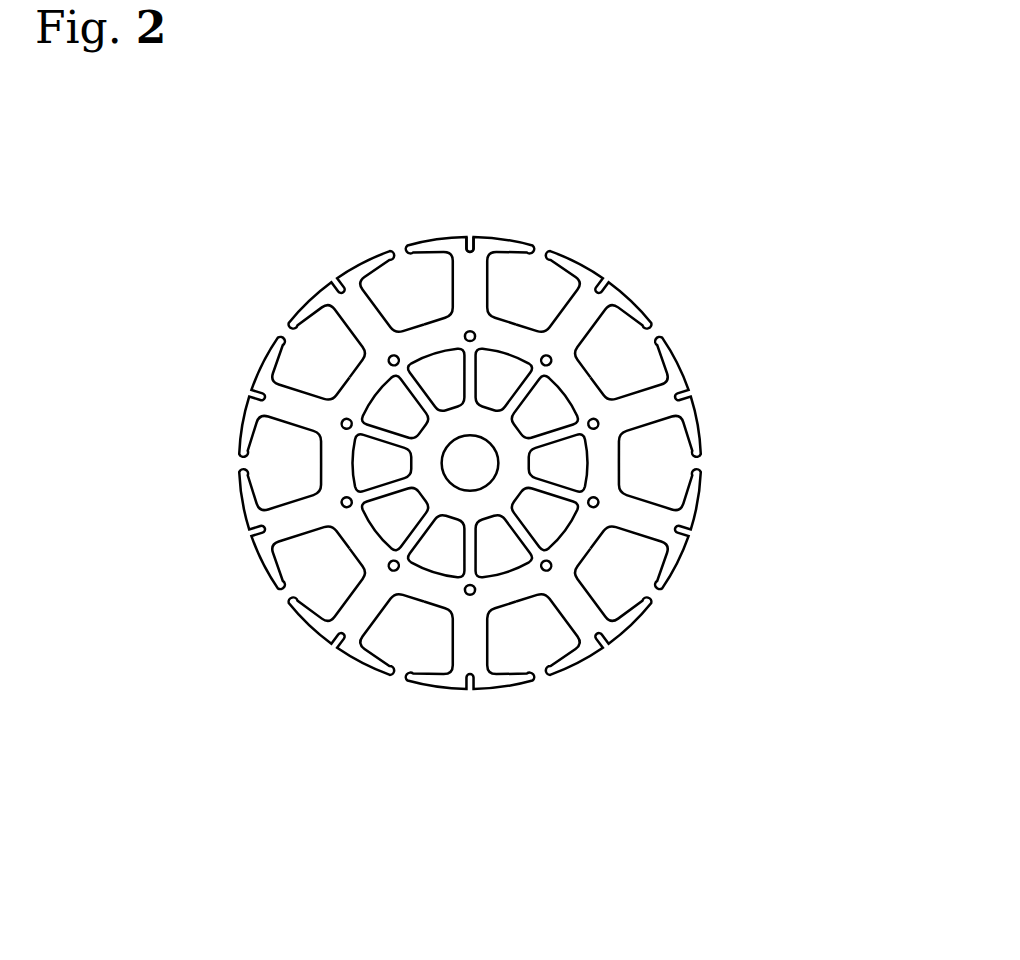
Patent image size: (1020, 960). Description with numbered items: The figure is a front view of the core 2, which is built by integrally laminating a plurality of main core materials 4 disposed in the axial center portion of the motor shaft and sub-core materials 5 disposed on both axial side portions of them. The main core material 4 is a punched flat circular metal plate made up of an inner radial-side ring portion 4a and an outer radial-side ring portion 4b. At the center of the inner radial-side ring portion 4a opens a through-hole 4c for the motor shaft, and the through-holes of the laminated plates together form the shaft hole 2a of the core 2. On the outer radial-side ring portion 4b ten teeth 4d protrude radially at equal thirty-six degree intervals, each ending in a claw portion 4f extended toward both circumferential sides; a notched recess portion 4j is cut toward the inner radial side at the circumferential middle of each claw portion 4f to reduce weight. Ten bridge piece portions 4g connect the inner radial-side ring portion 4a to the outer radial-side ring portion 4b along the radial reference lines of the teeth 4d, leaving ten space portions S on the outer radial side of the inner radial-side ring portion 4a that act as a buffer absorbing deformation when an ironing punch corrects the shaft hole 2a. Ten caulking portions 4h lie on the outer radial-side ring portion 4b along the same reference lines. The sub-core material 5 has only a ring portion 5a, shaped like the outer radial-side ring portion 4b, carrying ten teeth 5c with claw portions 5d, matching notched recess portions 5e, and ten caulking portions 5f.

The core 2 is at (656, 200).
The main core material 4 is at (505, 198).
The sub-core material 5 is at (540, 220).
The inner radial-side ring portion 4a is at (449, 503).
The outer radial-side ring portion 4b is at (579, 666).
The ring portion 5a is at (510, 595).
The through-hole 4c is at (496, 452).
The shaft hole 2a is at (665, 462).
The teeth 4d is at (661, 309).
The circumferential teeth 5c is at (644, 305).
The claw portion 4f is at (731, 400).
The claw portions 5d is at (670, 354).
The bridge piece portions 4g is at (521, 527).
The caulking portions 4h is at (416, 528).
The caulking portions 5f is at (342, 423).
The notched recess portion 4j is at (432, 162).
The notched recess portions 5e is at (469, 238).
The space portions S is at (384, 518).